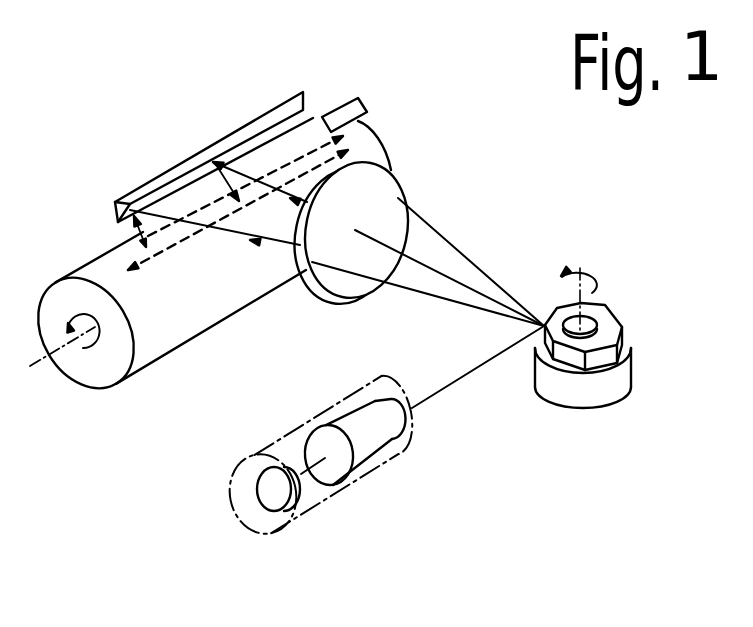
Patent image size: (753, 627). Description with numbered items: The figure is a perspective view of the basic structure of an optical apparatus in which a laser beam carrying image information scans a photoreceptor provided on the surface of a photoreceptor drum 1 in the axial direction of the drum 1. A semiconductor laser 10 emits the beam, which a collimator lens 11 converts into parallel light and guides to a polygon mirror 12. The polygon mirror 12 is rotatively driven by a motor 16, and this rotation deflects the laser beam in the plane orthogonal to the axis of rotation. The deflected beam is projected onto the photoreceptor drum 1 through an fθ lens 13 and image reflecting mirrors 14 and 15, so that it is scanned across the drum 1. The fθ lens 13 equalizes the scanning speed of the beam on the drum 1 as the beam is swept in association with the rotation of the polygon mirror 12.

The photoreceptor drum 1 is at (177, 348).
The semiconductor laser 10 is at (274, 504).
The collimator lens 11 is at (375, 455).
The polygon mirror 12 is at (618, 322).
The fθ lens 13 is at (400, 176).
The image reflecting mirror 14 is at (163, 172).
The image reflecting mirror 15 is at (362, 103).
The motor 16 is at (573, 407).